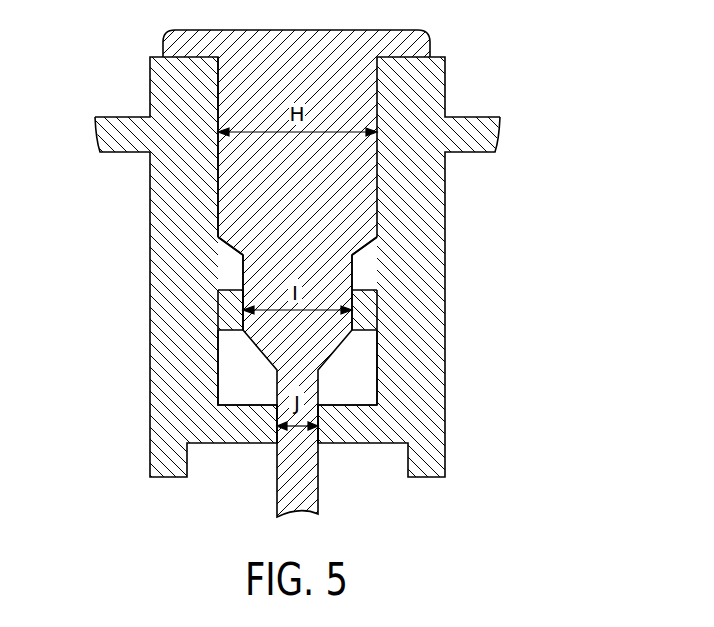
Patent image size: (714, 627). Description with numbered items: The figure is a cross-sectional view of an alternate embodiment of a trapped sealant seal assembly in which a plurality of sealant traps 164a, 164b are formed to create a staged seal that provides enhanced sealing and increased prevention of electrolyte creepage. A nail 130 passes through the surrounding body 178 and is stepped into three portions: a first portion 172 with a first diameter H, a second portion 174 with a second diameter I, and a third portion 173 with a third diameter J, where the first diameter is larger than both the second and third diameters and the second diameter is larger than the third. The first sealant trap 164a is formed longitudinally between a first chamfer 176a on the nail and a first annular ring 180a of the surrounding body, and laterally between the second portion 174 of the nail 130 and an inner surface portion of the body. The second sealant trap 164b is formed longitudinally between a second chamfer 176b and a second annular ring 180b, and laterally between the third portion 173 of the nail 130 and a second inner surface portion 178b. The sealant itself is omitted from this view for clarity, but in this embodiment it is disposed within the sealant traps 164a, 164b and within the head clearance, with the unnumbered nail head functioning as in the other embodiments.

The nail 130 is at (235, 213).
The first sealant trap 164a is at (237, 272).
The second sealant trap 164b is at (237, 370).
The first portion 172 is at (363, 227).
The third portion 173 is at (312, 495).
The second portion 174 is at (338, 273).
The first chamfer 176a is at (367, 248).
The second chamfer 176b is at (358, 347).
The housing 178 is at (438, 82).
The second inner surface portion 178b is at (388, 390).
The first annular ring 180a is at (233, 312).
The second annular ring 180b is at (248, 426).